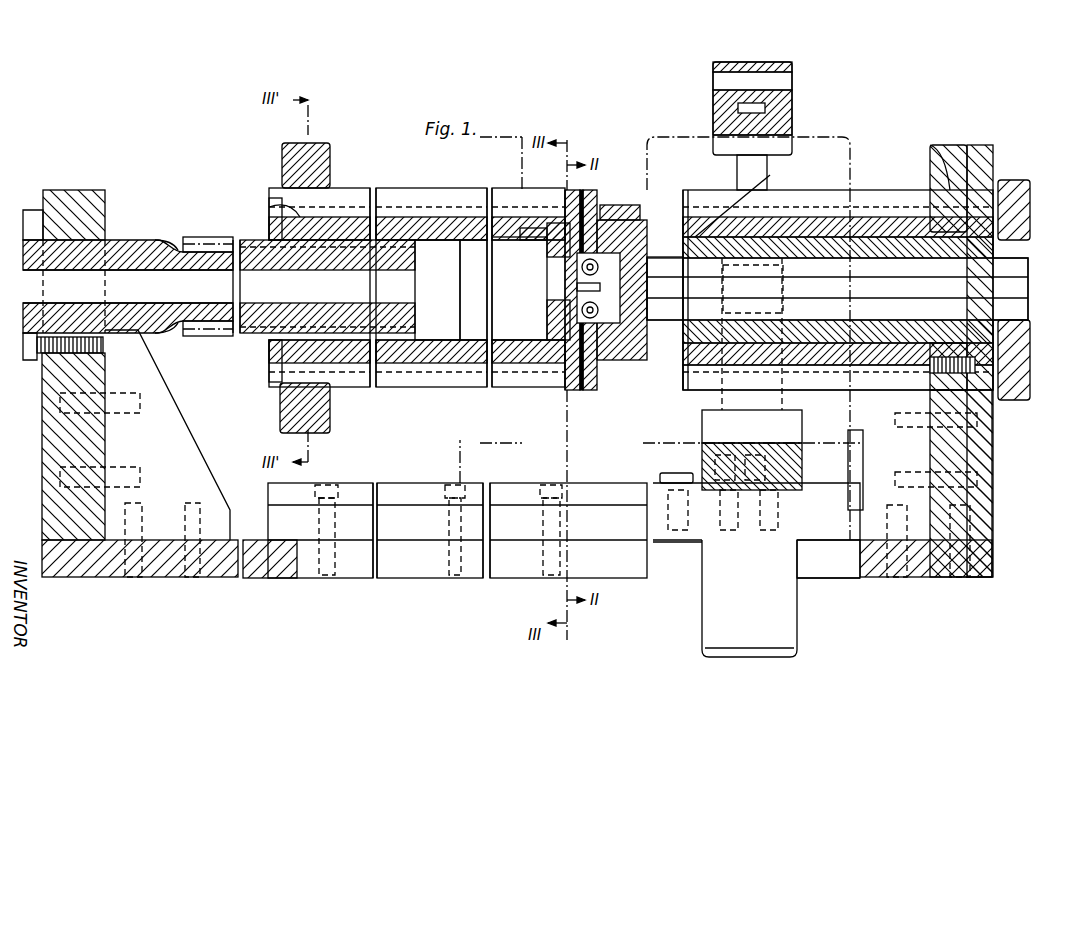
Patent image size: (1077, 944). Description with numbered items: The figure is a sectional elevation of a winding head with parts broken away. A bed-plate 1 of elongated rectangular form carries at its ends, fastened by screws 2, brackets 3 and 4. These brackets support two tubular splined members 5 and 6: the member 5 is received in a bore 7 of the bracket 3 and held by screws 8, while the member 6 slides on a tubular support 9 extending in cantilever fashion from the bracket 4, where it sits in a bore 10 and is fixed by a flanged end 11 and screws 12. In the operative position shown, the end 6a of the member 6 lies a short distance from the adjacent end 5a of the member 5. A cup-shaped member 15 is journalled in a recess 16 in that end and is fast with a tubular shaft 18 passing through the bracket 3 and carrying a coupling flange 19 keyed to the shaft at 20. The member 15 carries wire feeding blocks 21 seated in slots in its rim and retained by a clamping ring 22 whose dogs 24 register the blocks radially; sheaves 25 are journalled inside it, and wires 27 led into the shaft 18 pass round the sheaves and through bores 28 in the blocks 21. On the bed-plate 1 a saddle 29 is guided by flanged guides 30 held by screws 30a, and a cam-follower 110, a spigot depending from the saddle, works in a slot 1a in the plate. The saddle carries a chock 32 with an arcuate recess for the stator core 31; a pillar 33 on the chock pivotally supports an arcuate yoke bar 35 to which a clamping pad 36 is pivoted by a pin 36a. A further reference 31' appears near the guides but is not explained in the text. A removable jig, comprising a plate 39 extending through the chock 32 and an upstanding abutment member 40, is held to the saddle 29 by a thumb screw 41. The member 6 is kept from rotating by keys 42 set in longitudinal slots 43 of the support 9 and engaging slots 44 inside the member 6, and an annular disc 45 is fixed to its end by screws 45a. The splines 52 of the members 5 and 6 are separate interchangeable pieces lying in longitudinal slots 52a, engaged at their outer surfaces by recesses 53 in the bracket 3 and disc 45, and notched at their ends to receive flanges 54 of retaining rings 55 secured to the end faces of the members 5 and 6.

The bed-plate 1 is at (268, 570).
The slot 1a is at (805, 570).
The screws 2 is at (130, 577).
The bracket 3 is at (985, 460).
The bracket 4 is at (100, 440).
The splined member 5 is at (826, 217).
The end of splined member 5a is at (690, 330).
The splined member 6 is at (290, 240).
The end of splined member 6a is at (540, 240).
The bore 7 is at (952, 148).
The screws 8 is at (935, 395).
The tubular support 9 is at (140, 240).
The bore 10 is at (92, 236).
The flanged end 11 is at (32, 210).
The screws 12 is at (104, 350).
The cup-shaped member 15 is at (747, 198).
The recess 16 is at (670, 200).
The tubular shaft 18 is at (882, 240).
The coupling flange 19 is at (1010, 180).
The key 20 is at (1016, 360).
The blocks 21 is at (555, 325).
The clamping ring 22 is at (555, 238).
The dogs 24 is at (568, 270).
The sheaves 25 is at (580, 288).
The wires 27 is at (800, 520).
The bores 28 is at (583, 195).
The saddle 29 is at (828, 545).
The flanged guides 30 is at (396, 490).
The screws 30a is at (328, 485).
The stator core 31 is at (584, 364).
The section line 31' is at (446, 461).
The chock 32 is at (705, 427).
The vertical pillar 33 is at (780, 400).
The arcuate yoke bar 35 is at (740, 166).
The clamping pad 36 is at (713, 112).
The pin 36a is at (792, 82).
The plate 39 is at (690, 540).
The abutment member 40 is at (863, 453).
The thumb screw 41 is at (668, 473).
The keys 42 is at (193, 237).
The longitudinal slots 43 is at (165, 248).
The slots 44 is at (428, 300).
The annular disc 45 is at (285, 145).
The screws 45a is at (268, 208).
The splines 52 is at (348, 188).
The longitudinal slots 52a is at (435, 387).
The recesses 53 is at (270, 200).
The flanges 54 is at (535, 228).
The retaining rings 55 is at (597, 230).
The cam-follower 110 is at (785, 630).